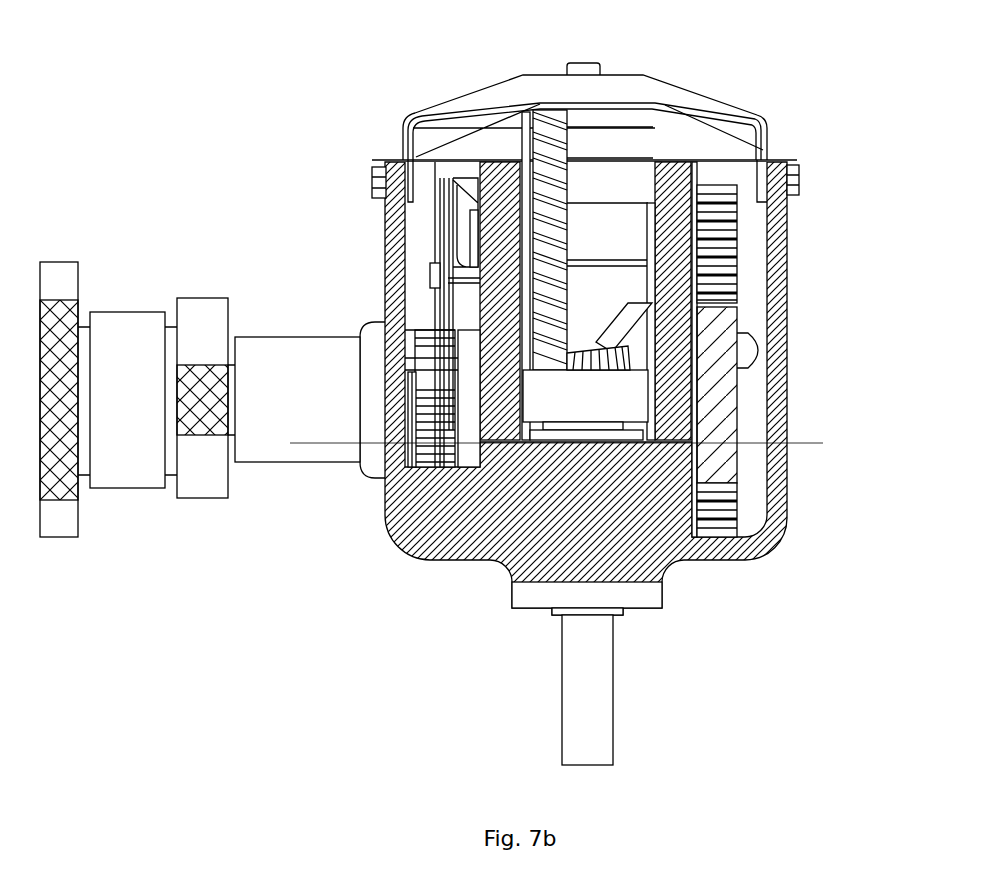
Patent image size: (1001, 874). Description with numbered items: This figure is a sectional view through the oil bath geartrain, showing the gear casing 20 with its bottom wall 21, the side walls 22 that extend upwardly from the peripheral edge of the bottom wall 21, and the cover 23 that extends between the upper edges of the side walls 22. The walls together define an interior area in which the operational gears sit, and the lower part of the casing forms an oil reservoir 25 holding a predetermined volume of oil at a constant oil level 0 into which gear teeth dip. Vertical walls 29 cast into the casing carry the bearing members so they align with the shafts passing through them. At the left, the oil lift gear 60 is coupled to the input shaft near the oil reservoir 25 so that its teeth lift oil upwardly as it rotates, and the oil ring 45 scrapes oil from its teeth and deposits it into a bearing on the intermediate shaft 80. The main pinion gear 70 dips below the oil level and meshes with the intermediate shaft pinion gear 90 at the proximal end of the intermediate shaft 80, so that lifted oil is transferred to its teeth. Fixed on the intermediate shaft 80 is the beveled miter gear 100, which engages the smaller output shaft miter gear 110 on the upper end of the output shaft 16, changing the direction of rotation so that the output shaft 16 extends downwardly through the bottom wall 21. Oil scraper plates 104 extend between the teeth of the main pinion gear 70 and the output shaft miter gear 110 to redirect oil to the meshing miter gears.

The oil level 0 is at (822, 428).
The output shaft 16 is at (595, 745).
The gear casing 20 is at (805, 119).
The bottom wall 21 is at (705, 562).
The side walls 22 is at (787, 212).
The cover 23 is at (653, 90).
The oil reservoir 25 is at (460, 538).
The vertical walls 29 is at (492, 183).
The oil ring 45 is at (426, 233).
The oil lift gear 60 is at (432, 432).
The main pinion gear 70 is at (718, 505).
The intermediate shaft 80 is at (618, 227).
The intermediate shaft pinion gear 90 is at (700, 241).
The miter gear 100 is at (543, 110).
The oil scraper plates 104 is at (655, 303).
The output shaft miter gear 110 is at (590, 347).